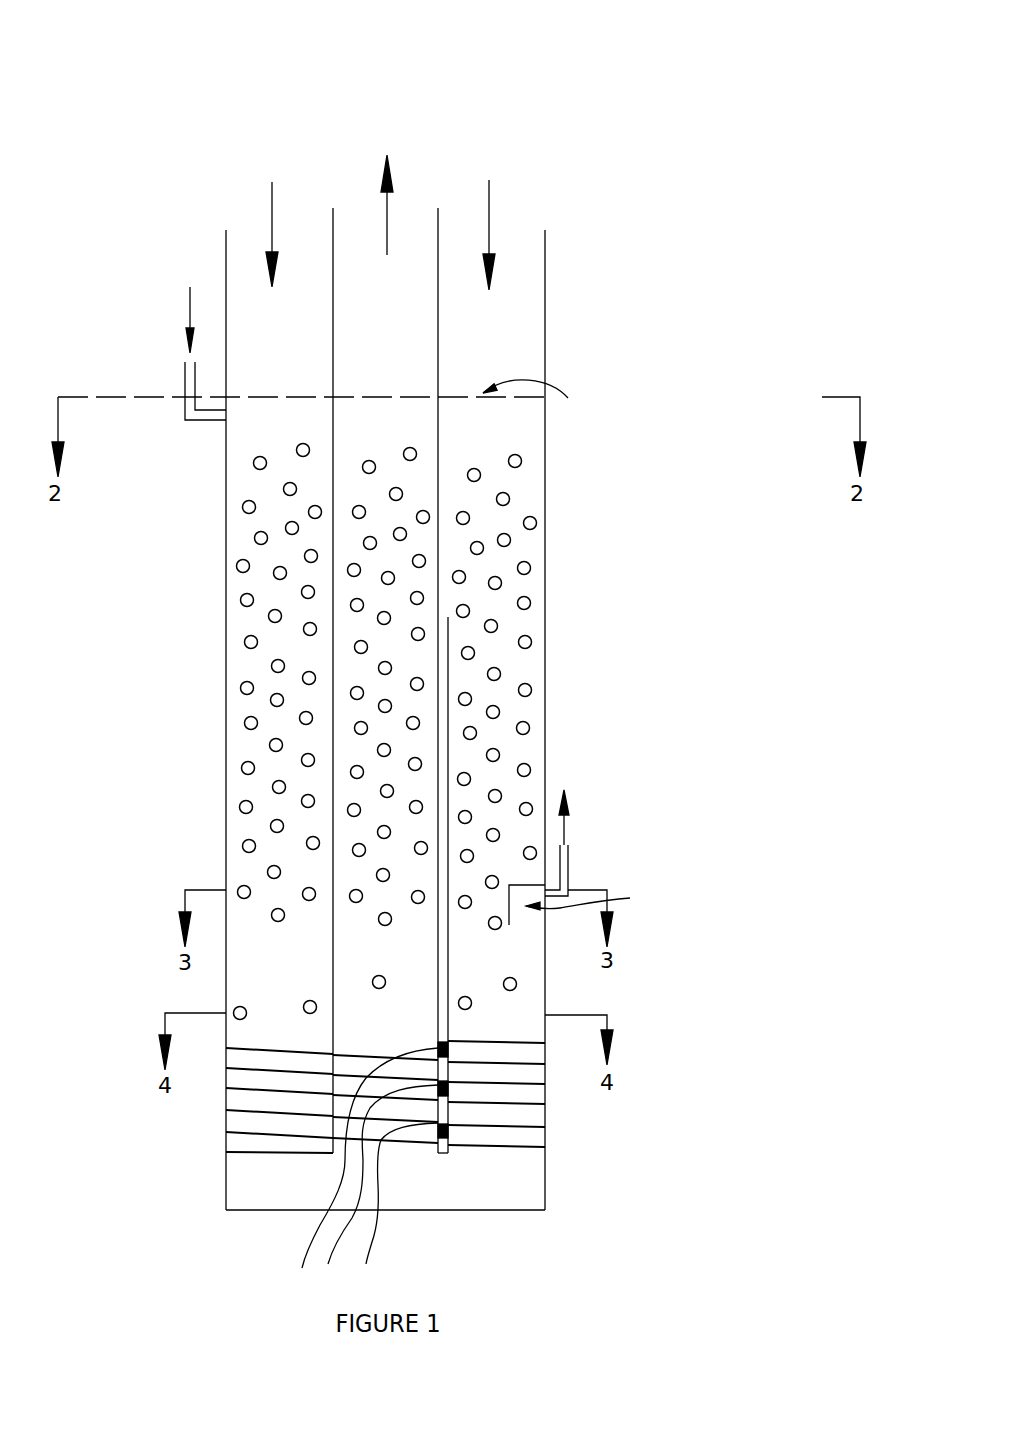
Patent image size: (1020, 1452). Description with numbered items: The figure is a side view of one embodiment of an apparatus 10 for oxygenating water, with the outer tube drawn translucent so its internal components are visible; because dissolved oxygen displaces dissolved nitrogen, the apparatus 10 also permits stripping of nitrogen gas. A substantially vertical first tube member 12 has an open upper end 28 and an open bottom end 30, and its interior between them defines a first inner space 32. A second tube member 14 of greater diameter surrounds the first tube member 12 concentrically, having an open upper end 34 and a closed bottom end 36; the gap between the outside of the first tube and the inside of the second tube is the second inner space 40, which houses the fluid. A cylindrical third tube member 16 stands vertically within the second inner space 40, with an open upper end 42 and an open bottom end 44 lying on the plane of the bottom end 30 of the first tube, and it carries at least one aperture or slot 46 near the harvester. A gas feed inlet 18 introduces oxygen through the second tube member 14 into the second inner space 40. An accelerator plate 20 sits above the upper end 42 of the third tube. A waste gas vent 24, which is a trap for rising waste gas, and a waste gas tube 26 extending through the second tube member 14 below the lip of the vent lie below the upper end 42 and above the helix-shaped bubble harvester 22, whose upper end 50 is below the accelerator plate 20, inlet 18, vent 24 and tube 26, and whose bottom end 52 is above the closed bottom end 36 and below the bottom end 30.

The apparatus 10 is at (588, 318).
The first tube member 12 is at (440, 233).
The second tube member 14 is at (546, 253).
The third tube member 16 is at (450, 675).
The gas feed inlet 18 is at (183, 410).
The accelerator plate 20 is at (493, 397).
The bubble harvester 22 is at (497, 1127).
The waste gas vent 24 is at (509, 925).
The waste gas tube 26 is at (568, 868).
The upper end 28 is at (403, 227).
The bottom end 30 is at (397, 1148).
The first inner space 32 is at (392, 346).
The open upper end 34 is at (268, 305).
The closed bottom end 36 is at (247, 1210).
The second inner space 40 is at (279, 642).
The open upper end 42 is at (445, 615).
The open bottom end 44 is at (448, 1154).
The aperture or slot 46 is at (358, 1170).
The upper end 50 is at (437, 1037).
The bottom end 52 is at (333, 1157).